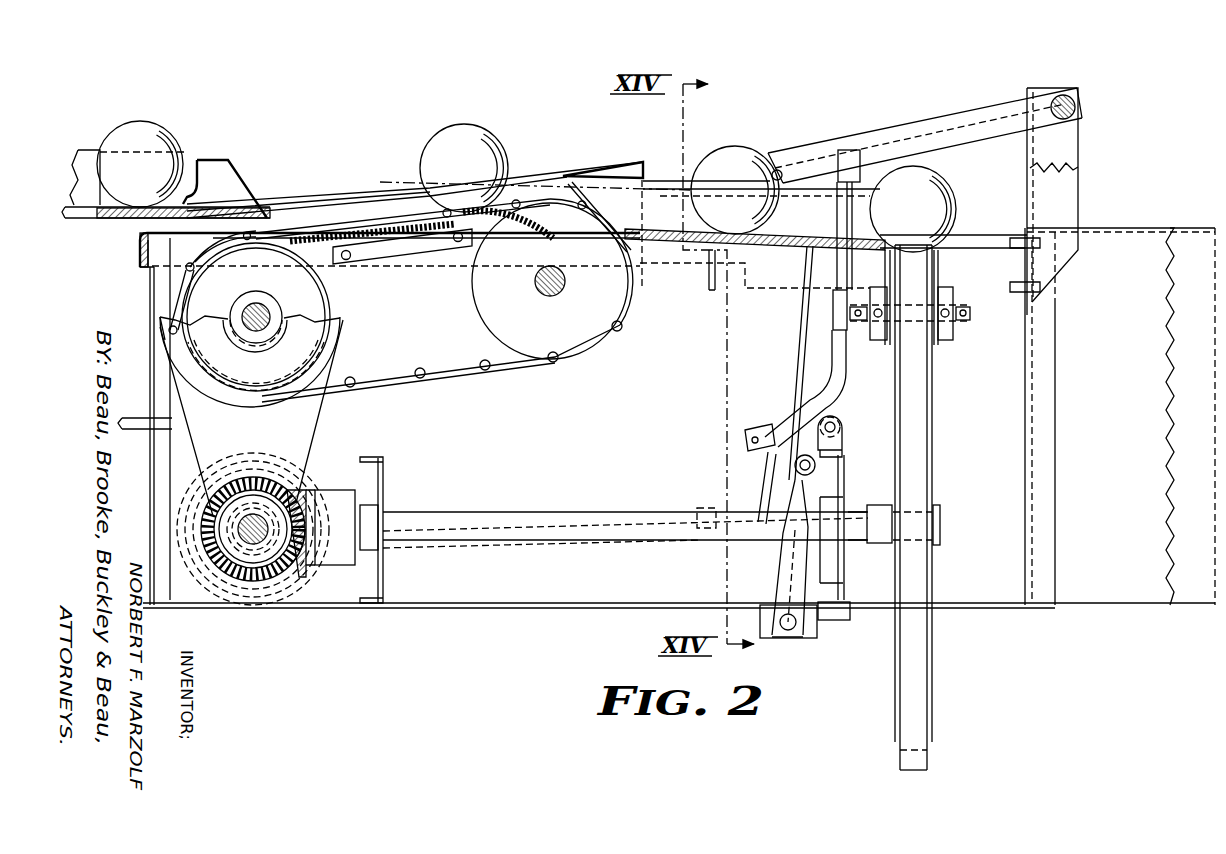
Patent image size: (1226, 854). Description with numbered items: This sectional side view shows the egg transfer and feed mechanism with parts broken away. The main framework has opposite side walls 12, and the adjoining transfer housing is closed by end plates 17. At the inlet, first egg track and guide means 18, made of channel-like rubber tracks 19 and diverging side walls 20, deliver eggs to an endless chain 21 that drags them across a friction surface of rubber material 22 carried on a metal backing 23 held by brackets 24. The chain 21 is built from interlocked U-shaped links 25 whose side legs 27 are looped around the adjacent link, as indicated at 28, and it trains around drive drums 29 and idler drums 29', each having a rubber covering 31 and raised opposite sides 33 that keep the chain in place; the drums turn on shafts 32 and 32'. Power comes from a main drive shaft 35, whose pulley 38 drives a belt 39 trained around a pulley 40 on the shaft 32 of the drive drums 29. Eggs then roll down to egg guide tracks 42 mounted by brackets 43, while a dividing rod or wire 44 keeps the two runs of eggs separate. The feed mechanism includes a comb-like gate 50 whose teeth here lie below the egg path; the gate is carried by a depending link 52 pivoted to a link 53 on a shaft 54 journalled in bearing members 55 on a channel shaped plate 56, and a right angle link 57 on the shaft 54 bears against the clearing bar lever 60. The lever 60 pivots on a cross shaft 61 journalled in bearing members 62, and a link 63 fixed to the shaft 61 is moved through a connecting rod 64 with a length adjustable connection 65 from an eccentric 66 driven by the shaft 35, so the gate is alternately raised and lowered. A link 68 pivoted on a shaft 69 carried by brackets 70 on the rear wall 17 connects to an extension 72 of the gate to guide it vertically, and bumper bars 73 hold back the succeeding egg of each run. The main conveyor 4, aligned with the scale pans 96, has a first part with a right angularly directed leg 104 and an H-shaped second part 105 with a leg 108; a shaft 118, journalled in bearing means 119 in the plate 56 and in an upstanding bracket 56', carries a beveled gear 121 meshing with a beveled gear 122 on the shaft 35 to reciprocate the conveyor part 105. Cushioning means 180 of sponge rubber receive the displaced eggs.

The main conveyor 4 is at (937, 410).
The side walls 12 is at (1138, 240).
The end plates 17 is at (1045, 488).
The first egg track and guide means 18 is at (105, 212).
The channel-like rubber tracks 19 is at (192, 200).
The diverging side walls 20 is at (75, 158).
The endless chain 21 is at (466, 376).
The friction surface 22 is at (292, 240).
The backing 23 is at (490, 228).
The brackets 24 is at (398, 255).
The links 25 is at (537, 363).
The side legs 27 is at (397, 385).
The looped juncture 28 is at (413, 372).
The drive drums 29 is at (284, 317).
The idler drums 29' is at (527, 279).
The covering 31 is at (338, 261).
The shaft 32 is at (230, 307).
The shaft 32' is at (539, 298).
The opposite sides 33 is at (600, 352).
The main drive shaft 35 is at (253, 548).
The pulley 38 is at (243, 548).
The belt 39 is at (315, 432).
The pulley 40 is at (245, 395).
The egg guide tracks 42 is at (680, 242).
The brackets 43 is at (712, 272).
The dividing rod 44 is at (300, 203).
The gate 50 is at (848, 323).
The depending link 52 is at (835, 368).
The link 53 is at (760, 428).
The shaft 54 is at (838, 422).
The bearing members 55 is at (845, 445).
The channel shaped plate 56 is at (867, 535).
The upstanding bracket 56' is at (400, 527).
The right angle link 57 is at (770, 458).
The clearing bar lever 60 is at (803, 353).
The cross shaft 61 is at (796, 630).
The bearing members 62 is at (820, 630).
The link 63 is at (790, 572).
The connecting rod 64 is at (433, 545).
The length adjustable connection 65 is at (708, 508).
The eccentric 66 is at (290, 585).
The link 68 is at (968, 148).
The shaft 69 is at (1077, 107).
The brackets 70 is at (1067, 134).
The extension 72 is at (849, 150).
The bumper bars 73 is at (782, 172).
The scale pans 96 is at (933, 250).
The leg 104 is at (928, 762).
The second part 105 is at (917, 250).
The leg 108 is at (933, 705).
The shaft 118 is at (550, 512).
The bearing means 119 is at (362, 480).
The beveled gear 121 is at (305, 567).
The beveled gear 122 is at (268, 575).
The cushioning means 180 is at (783, 282).